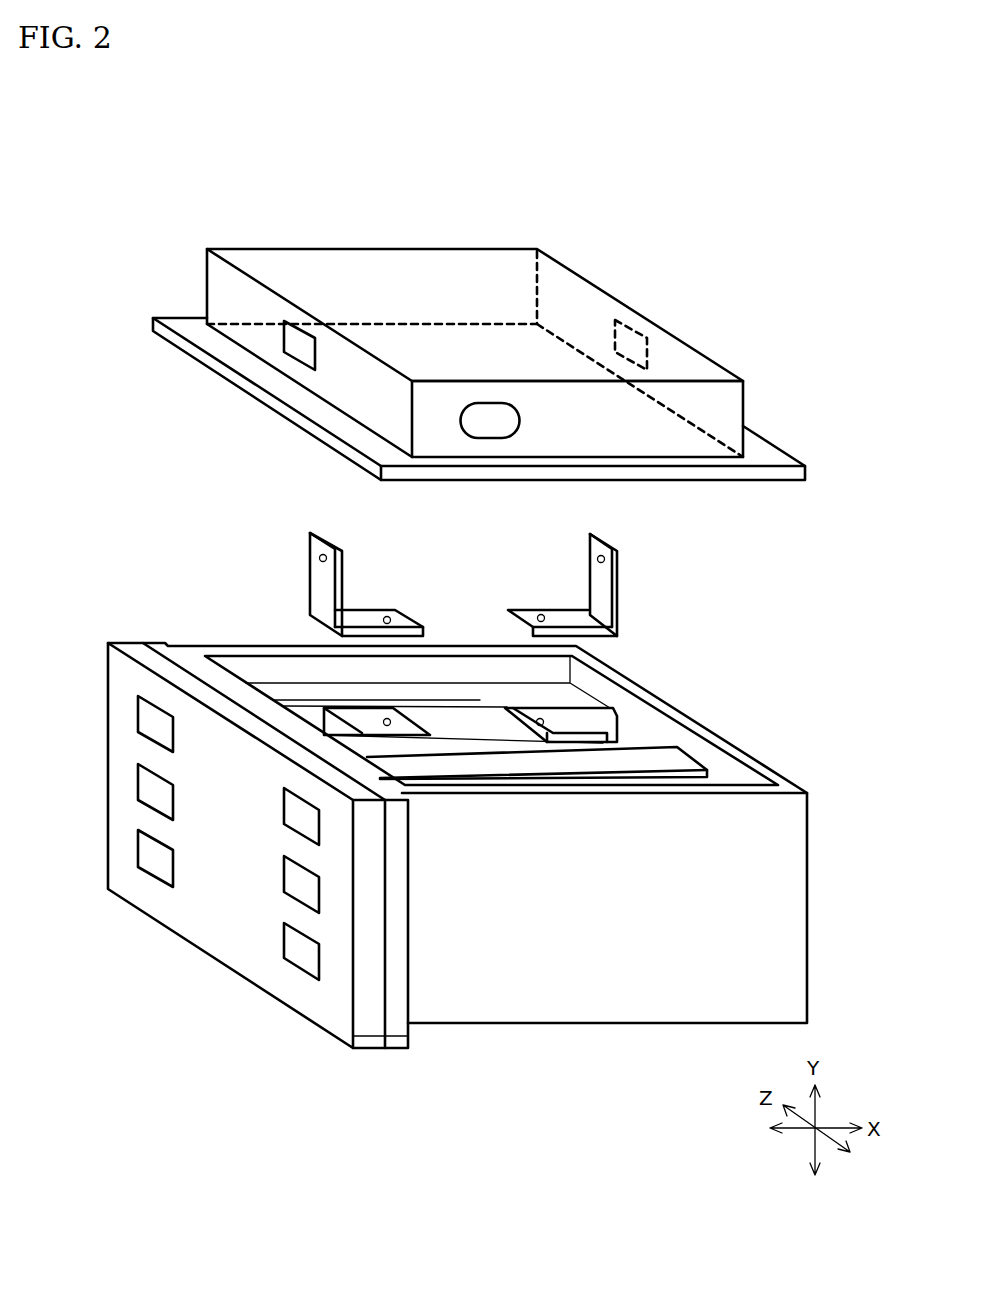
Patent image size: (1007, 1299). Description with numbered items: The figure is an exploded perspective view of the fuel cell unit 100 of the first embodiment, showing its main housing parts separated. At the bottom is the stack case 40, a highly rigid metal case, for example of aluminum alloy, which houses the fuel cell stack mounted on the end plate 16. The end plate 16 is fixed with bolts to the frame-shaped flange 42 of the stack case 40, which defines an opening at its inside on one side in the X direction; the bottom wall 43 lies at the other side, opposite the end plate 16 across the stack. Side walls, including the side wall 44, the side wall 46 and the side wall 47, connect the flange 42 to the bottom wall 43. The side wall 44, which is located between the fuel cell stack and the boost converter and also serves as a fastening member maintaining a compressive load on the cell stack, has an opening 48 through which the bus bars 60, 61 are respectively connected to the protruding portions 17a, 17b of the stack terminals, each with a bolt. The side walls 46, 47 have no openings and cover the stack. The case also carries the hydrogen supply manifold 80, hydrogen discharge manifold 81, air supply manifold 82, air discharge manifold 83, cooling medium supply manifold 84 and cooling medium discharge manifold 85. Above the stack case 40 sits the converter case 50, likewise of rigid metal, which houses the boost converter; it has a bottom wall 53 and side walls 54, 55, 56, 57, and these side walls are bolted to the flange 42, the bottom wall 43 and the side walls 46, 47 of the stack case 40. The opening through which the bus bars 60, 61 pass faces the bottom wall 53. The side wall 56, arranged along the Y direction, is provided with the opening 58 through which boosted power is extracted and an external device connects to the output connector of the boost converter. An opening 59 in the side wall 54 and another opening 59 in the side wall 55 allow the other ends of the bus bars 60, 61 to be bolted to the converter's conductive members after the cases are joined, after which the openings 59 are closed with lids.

The fuel cell unit 100 is at (866, 183).
The converter case 50 is at (545, 250).
The bottom wall 53 is at (500, 282).
The side wall 54 is at (223, 292).
The side wall 55 is at (573, 310).
The side wall 56 is at (626, 428).
The side wall 57 is at (400, 290).
The opening 58 is at (490, 428).
The opening 59 is at (297, 343).
The bus bar 60 is at (318, 590).
The bus bar 61 is at (605, 577).
The stack case 40 is at (808, 932).
The flange 42 is at (397, 1040).
The bottom wall 43 is at (713, 743).
The side wall 44 is at (572, 698).
The side wall 46 is at (585, 988).
The side wall 47 is at (453, 652).
The opening 48 is at (470, 725).
The end plate 16 is at (370, 1039).
The protruding portion 17a is at (362, 717).
The protruding portion 17b is at (570, 720).
The hydrogen supply manifold 80 is at (292, 813).
The hydrogen discharge manifold 81 is at (143, 851).
The air supply manifold 82 is at (143, 720).
The air discharge manifold 83 is at (292, 946).
The cooling medium supply manifold 84 is at (143, 782).
The cooling medium discharge manifold 85 is at (292, 877).